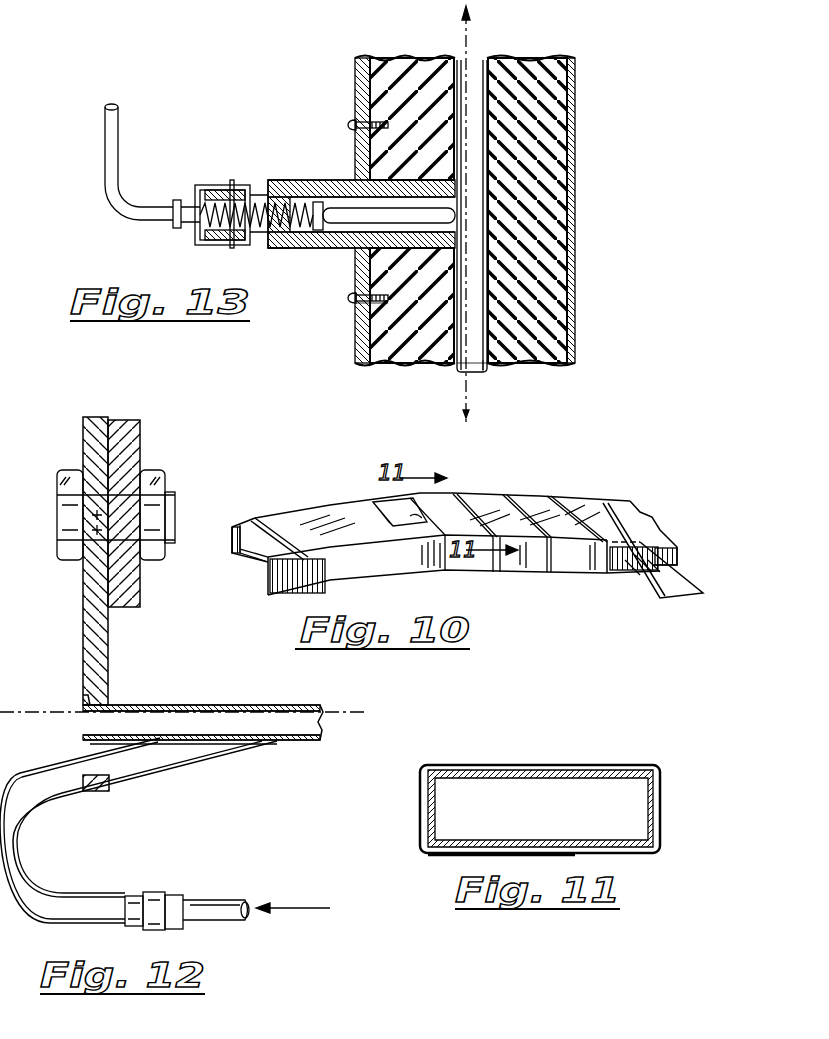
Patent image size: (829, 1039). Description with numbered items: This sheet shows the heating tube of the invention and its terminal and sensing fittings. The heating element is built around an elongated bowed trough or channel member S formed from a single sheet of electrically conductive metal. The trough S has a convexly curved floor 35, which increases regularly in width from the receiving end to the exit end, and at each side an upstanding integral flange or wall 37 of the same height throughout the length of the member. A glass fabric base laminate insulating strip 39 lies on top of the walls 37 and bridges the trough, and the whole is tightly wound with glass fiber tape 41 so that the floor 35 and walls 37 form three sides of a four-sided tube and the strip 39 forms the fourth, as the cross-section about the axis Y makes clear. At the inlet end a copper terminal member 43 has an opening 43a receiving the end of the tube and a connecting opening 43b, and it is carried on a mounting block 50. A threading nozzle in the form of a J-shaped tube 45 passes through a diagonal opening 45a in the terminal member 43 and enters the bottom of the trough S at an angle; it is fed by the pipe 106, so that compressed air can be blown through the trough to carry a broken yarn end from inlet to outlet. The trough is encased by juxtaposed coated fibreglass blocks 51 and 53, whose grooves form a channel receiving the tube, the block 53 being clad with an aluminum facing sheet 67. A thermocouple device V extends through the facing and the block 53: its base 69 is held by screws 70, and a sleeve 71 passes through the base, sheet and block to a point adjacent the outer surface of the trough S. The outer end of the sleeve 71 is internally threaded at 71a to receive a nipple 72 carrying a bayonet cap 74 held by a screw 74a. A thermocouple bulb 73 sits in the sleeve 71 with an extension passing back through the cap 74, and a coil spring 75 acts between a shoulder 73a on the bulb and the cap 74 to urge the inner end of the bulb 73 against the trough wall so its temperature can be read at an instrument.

In FIG. 13, the floor 35 is at (462, 375).
In FIG. 12, the floor 35 is at (258, 706).
In FIG. 10, the floor 35 is at (252, 572).
In FIG. 11, the floor 35 is at (625, 833).
In FIG. 12, the flange or wall 37 is at (322, 741).
In FIG. 10, the flange or wall 37 is at (243, 527).
In FIG. 11, the flange or wall 37 is at (438, 818).
In FIG. 13, the insulating strip 39 is at (483, 372).
In FIG. 12, the insulating strip 39 is at (290, 741).
In FIG. 10, the insulating strip 39 is at (282, 518).
In FIG. 11, the insulating strip 39 is at (462, 790).
In FIG. 13, the glass fiber tape 41 is at (412, 368).
In FIG. 10, the glass fiber tape 41 is at (567, 497).
In FIG. 11, the glass fiber tape 41 is at (520, 768).
In FIG. 12, the terminal member 43 is at (83, 634).
In FIG. 12, the opening 43a is at (85, 702).
In FIG. 12, the connecting opening 43b is at (92, 548).
In FIG. 12, the J-shaped tube 45 is at (32, 880).
In FIG. 12, the diagonal opening 45a is at (96, 792).
In FIG. 12, the mounting block 50 is at (142, 462).
In FIG. 13, the fibreglass block 51 is at (530, 70).
In FIG. 13, the fibreglass block 53 is at (390, 72).
In FIG. 13, the aluminum facing sheet 67 is at (576, 128).
In FIG. 13, the base 69 is at (355, 90).
In FIG. 13, the screws 70 is at (347, 128).
In FIG. 13, the sleeve 71 is at (328, 248).
In FIG. 13, the internal thread 71a is at (279, 248).
In FIG. 13, the nipple 72 is at (240, 246).
In FIG. 13, the thermocouple bulb 73 is at (345, 198).
In FIG. 13, the shoulder 73a is at (356, 303).
In FIG. 13, the bayonet cap 74 is at (248, 198).
In FIG. 13, the screw 74a is at (182, 262).
In FIG. 13, the coil spring 75 is at (230, 202).
In FIG. 12, the pipe 106 is at (212, 920).
In FIG. 13, the trough or channel member S is at (458, 62).
In FIG. 12, the trough or channel member S is at (196, 706).
In FIG. 10, the trough or channel member S is at (337, 505).
In FIG. 11, the trough or channel member S is at (452, 848).
In FIG. 13, the thermocouple device V is at (226, 186).
In FIG. 13, the axis Y is at (468, 412).
In FIG. 12, the axis Y is at (330, 720).
In FIG. 11, the axis Y is at (534, 838).